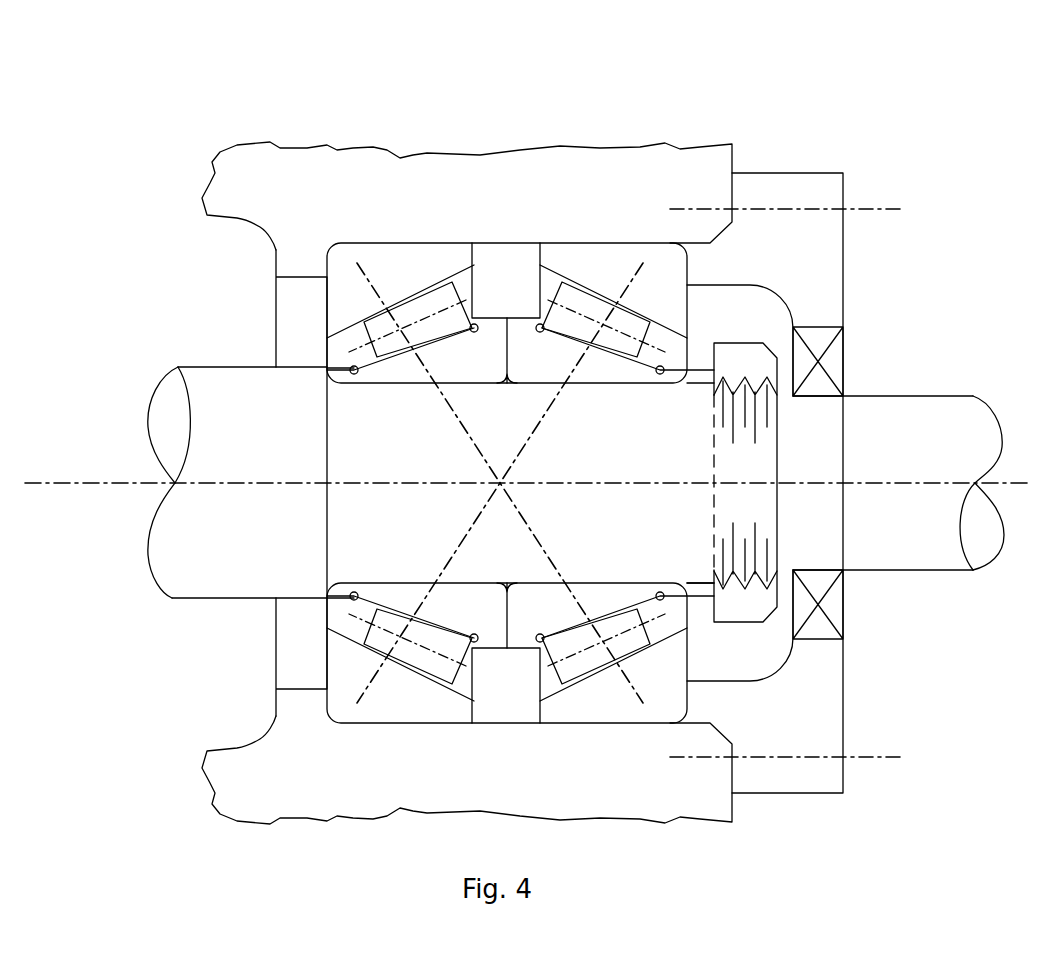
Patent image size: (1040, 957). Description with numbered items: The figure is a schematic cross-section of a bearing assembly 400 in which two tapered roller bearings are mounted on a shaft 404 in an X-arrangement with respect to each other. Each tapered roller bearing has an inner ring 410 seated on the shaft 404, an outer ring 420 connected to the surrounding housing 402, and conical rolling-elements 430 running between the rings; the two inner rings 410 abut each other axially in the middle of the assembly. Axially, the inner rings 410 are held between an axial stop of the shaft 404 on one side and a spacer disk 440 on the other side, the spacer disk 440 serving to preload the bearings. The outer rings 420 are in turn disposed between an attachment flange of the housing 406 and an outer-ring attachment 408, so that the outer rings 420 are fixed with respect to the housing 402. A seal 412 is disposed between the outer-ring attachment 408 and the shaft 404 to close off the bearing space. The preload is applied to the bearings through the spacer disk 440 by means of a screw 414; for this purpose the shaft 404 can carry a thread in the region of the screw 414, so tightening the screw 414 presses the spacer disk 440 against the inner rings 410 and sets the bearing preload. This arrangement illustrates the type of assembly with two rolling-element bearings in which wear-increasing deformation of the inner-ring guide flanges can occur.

The bearing assembly 400 is at (502, 116).
The housing 402 is at (667, 146).
The shaft 404 is at (172, 598).
The attachment flange of the bearing (the housing) 406 is at (298, 256).
The outer-ring attachment 408 is at (837, 253).
The inner rings 410 is at (417, 375).
The seal 412 is at (837, 363).
The screw 414 is at (757, 607).
The outer rings 420 is at (450, 257).
The conical rolling-elements 430 is at (408, 309).
The spacer disk 440 is at (697, 380).